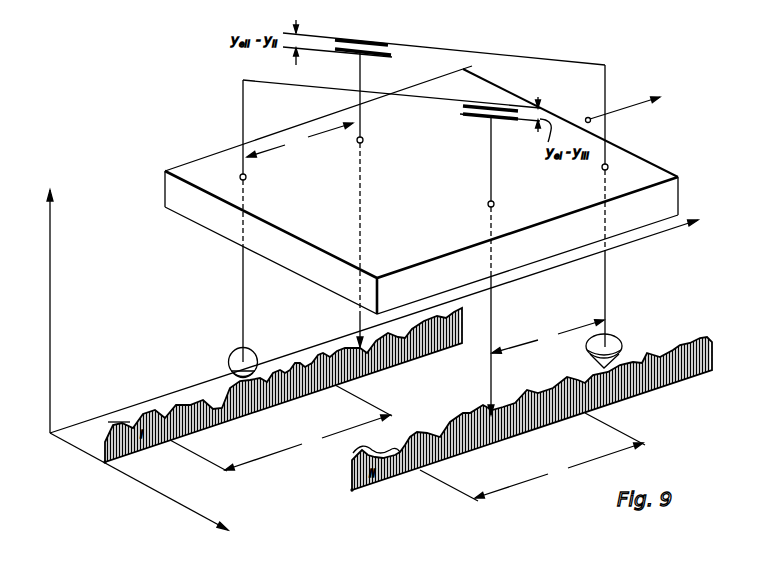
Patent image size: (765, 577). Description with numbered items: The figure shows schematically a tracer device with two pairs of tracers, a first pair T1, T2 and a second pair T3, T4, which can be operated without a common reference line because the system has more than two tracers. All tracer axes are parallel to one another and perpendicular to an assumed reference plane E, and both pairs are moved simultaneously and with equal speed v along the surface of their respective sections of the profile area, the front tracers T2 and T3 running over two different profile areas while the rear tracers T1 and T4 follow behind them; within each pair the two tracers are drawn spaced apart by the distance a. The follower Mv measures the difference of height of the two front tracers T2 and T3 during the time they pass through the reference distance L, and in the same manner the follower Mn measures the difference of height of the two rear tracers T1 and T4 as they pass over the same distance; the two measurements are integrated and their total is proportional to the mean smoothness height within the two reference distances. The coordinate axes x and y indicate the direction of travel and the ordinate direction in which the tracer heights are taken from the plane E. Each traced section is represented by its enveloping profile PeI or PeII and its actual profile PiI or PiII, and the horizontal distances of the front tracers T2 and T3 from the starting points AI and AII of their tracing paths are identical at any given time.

The tracer T1 is at (245, 229).
The tracer T2 is at (369, 199).
The tracer T3 is at (606, 216).
The tracer T4 is at (502, 265).
The follower Mv is at (366, 42).
The follower Mn is at (493, 107).
The reference plane E is at (250, 500).
The reference distance L is at (407, 443).
The probe spacing a is at (425, 238).
The speed v is at (631, 106).
The x axis x is at (381, 323).
The y axis y is at (50, 303).
The outer envelope profile I PeI is at (108, 422).
The inner envelope profile I PiI is at (118, 449).
The outer envelope profile II PeII is at (438, 437).
The inner envelope profile II PiII is at (398, 455).
The starting point AI is at (99, 473).
The starting point AII is at (351, 499).